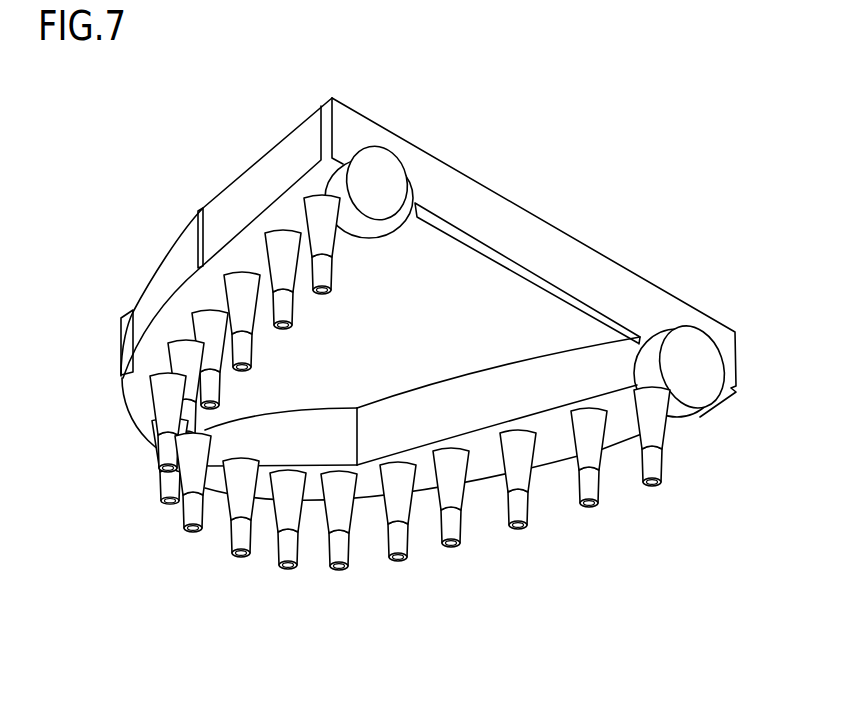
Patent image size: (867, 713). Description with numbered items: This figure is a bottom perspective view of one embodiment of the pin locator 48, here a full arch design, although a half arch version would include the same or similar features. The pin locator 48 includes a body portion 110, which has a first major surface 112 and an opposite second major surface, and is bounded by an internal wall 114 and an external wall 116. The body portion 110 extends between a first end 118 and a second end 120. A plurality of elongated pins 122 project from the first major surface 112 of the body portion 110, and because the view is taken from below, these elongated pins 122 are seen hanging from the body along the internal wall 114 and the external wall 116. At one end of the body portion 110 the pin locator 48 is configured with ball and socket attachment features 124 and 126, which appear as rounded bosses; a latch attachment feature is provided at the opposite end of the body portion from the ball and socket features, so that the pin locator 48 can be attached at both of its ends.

The pin locator 48 is at (423, 333).
The body portion 110 is at (208, 382).
The first major surface 112 is at (142, 393).
The internal wall 114 is at (463, 398).
The external wall 116 is at (272, 162).
The first end 118 is at (148, 473).
The second end 120 is at (519, 218).
The elongated pins 122 is at (658, 438).
The ball and socket attachment feature 124 is at (375, 178).
The ball and socket attachment feature 126 is at (693, 360).